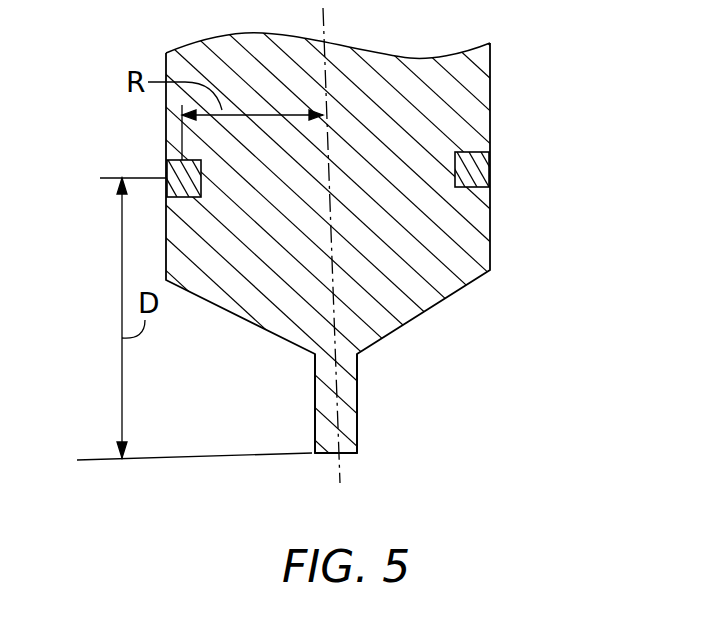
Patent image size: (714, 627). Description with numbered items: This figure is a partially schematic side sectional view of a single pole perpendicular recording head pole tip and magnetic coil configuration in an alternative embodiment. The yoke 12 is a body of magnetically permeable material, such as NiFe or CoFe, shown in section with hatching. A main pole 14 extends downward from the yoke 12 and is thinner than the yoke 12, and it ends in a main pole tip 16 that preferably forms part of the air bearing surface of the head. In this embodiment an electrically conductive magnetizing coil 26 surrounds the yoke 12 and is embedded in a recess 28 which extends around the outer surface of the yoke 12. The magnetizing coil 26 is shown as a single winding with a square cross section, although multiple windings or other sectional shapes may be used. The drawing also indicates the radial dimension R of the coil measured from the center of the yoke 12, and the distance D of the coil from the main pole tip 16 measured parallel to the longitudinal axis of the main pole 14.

The yoke 12 is at (472, 60).
The main pole 14 is at (347, 382).
The main pole tip 16 is at (350, 454).
The magnetizing coil 26 is at (490, 168).
The recess 28 is at (473, 150).